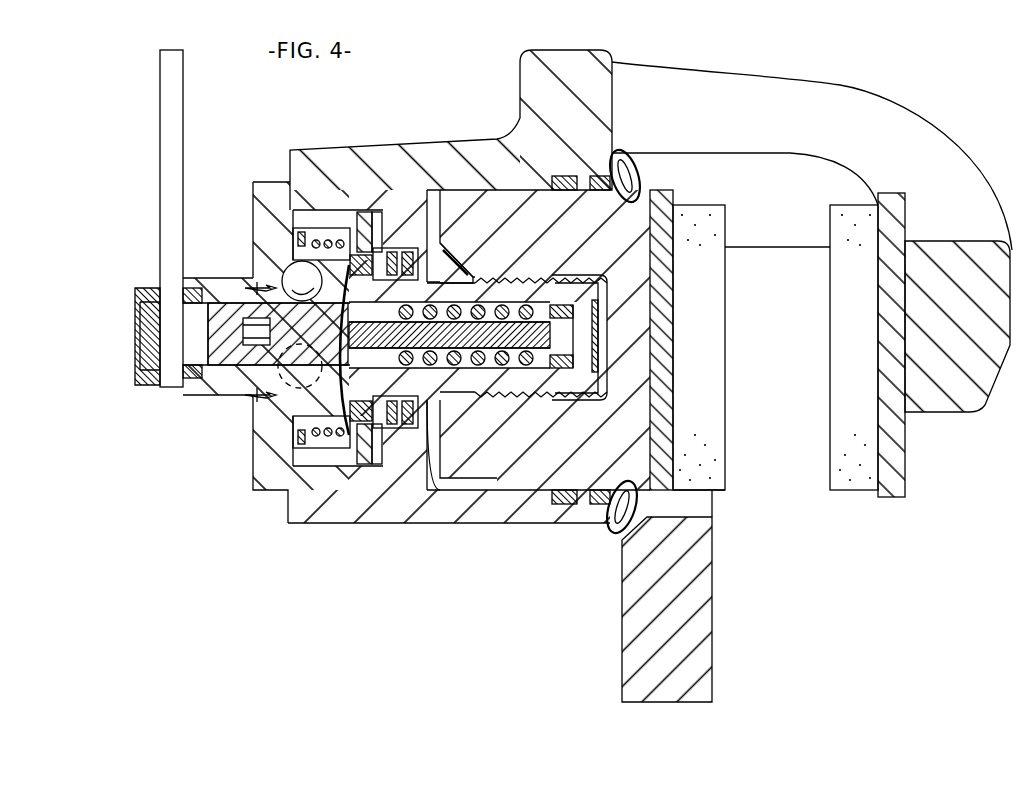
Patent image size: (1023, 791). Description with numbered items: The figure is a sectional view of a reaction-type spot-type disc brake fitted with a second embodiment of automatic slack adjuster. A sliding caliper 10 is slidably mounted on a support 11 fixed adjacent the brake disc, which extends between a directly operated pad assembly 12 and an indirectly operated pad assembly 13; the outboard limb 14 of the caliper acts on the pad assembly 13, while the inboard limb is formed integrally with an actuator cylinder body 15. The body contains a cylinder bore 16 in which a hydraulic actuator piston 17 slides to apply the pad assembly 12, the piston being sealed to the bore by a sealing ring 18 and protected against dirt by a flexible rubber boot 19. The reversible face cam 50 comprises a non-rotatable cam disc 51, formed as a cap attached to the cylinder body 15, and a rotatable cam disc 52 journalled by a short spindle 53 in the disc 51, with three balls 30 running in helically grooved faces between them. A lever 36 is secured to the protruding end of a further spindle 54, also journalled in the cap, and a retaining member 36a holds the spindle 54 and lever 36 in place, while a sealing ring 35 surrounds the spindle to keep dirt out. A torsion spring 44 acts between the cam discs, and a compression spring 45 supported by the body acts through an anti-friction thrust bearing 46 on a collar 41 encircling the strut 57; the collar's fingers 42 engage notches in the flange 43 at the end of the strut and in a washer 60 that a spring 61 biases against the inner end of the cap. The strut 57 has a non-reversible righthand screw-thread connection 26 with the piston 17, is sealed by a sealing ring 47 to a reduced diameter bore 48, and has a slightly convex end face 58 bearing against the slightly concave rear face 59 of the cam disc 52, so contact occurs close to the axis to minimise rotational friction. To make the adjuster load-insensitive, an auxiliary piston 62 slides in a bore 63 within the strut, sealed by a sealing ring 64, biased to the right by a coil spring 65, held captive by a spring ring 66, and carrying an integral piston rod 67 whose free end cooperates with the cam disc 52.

The sliding caliper 10 is at (525, 70).
The support 11 is at (705, 585).
The directly operated pad assembly 12 is at (722, 455).
The indirectly operated pad assembly 13 is at (838, 455).
The outboard limb 14 is at (945, 412).
The actuator cylinder body 15 is at (435, 140).
The cylinder bore 16 is at (473, 492).
The hydraulic actuator piston 17 is at (520, 480).
The sealing ring 18 is at (560, 176).
The flexible rubber boot 19 is at (640, 176).
The non-reversible righthand screw-thread connection 26 is at (530, 283).
The balls 30 is at (282, 232).
The sealing ring 35 is at (205, 378).
The lever 36 is at (175, 78).
The retaining member 36a is at (135, 335).
The collar 41 is at (392, 250).
The fingers 42 is at (350, 262).
The flange 43 is at (362, 275).
The torsion spring 44 is at (288, 495).
The compression spring 45 is at (440, 458).
The anti-friction thrust bearing 46 is at (433, 492).
The sealing ring 47 is at (470, 262).
The reduced diameter bore 48 is at (443, 255).
The reversible face cam 50 is at (311, 205).
The non-rotatable cam disc 51 is at (268, 196).
The rotatable cam disc 52 is at (250, 452).
The short spindle 53 is at (228, 276).
The further spindle 54 is at (224, 360).
The strut 57 is at (500, 290).
The convex lefthand end face 58 is at (296, 272).
The concave rear face 59 is at (345, 378).
The washer 60 is at (348, 450).
The spring 61 is at (390, 470).
The auxiliary piston 62 is at (580, 335).
The bore 63 is at (518, 365).
The sealing ring 64 is at (563, 365).
The coil spring 65 is at (557, 285).
The spring ring 66 is at (598, 366).
The piston rod 67 is at (472, 345).